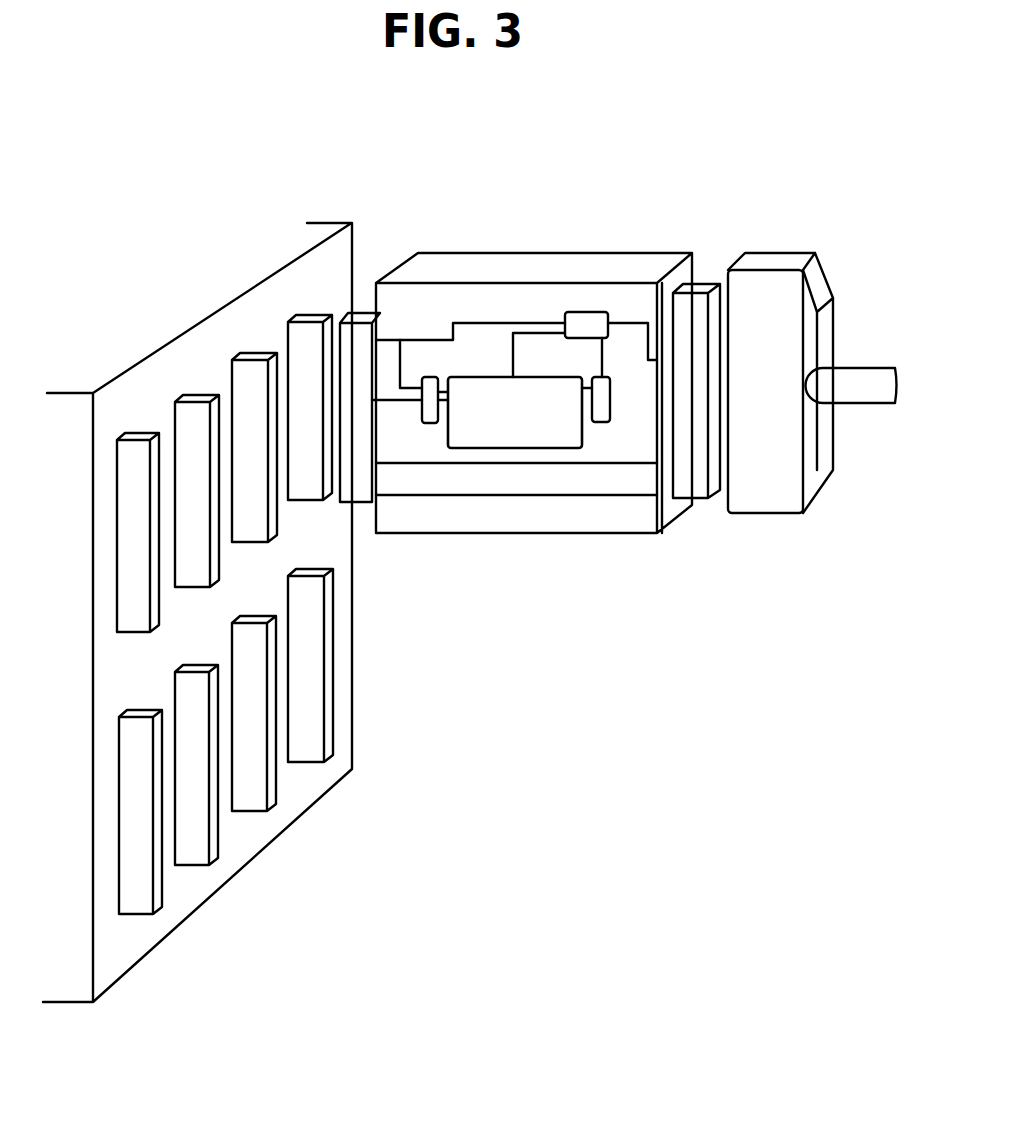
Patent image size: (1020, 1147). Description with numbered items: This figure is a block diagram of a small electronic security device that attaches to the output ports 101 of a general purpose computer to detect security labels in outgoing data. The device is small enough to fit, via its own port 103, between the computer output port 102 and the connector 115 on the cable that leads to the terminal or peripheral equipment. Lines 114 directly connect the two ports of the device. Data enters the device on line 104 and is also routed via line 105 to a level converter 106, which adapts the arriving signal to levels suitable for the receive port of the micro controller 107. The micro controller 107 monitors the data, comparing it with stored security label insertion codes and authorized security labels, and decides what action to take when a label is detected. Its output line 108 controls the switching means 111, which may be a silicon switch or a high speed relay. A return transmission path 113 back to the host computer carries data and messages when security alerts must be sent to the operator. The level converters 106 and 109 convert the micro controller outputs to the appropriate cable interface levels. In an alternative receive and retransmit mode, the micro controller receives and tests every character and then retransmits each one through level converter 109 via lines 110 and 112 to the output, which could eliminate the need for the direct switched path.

The output ports 101 is at (170, 340).
The computer output port 102 is at (312, 332).
The port 103 is at (368, 318).
The line 104 is at (487, 377).
The line 105 is at (402, 365).
The level converter 106 is at (430, 423).
The micro controller 107 is at (505, 330).
The output line 108 is at (537, 323).
The level converter 109 is at (600, 422).
The line 110 is at (603, 352).
The switching means 111 is at (592, 310).
The line 112 is at (632, 307).
The return transmission path 113 is at (400, 402).
The lines 114 is at (632, 482).
The connector 115 is at (777, 283).